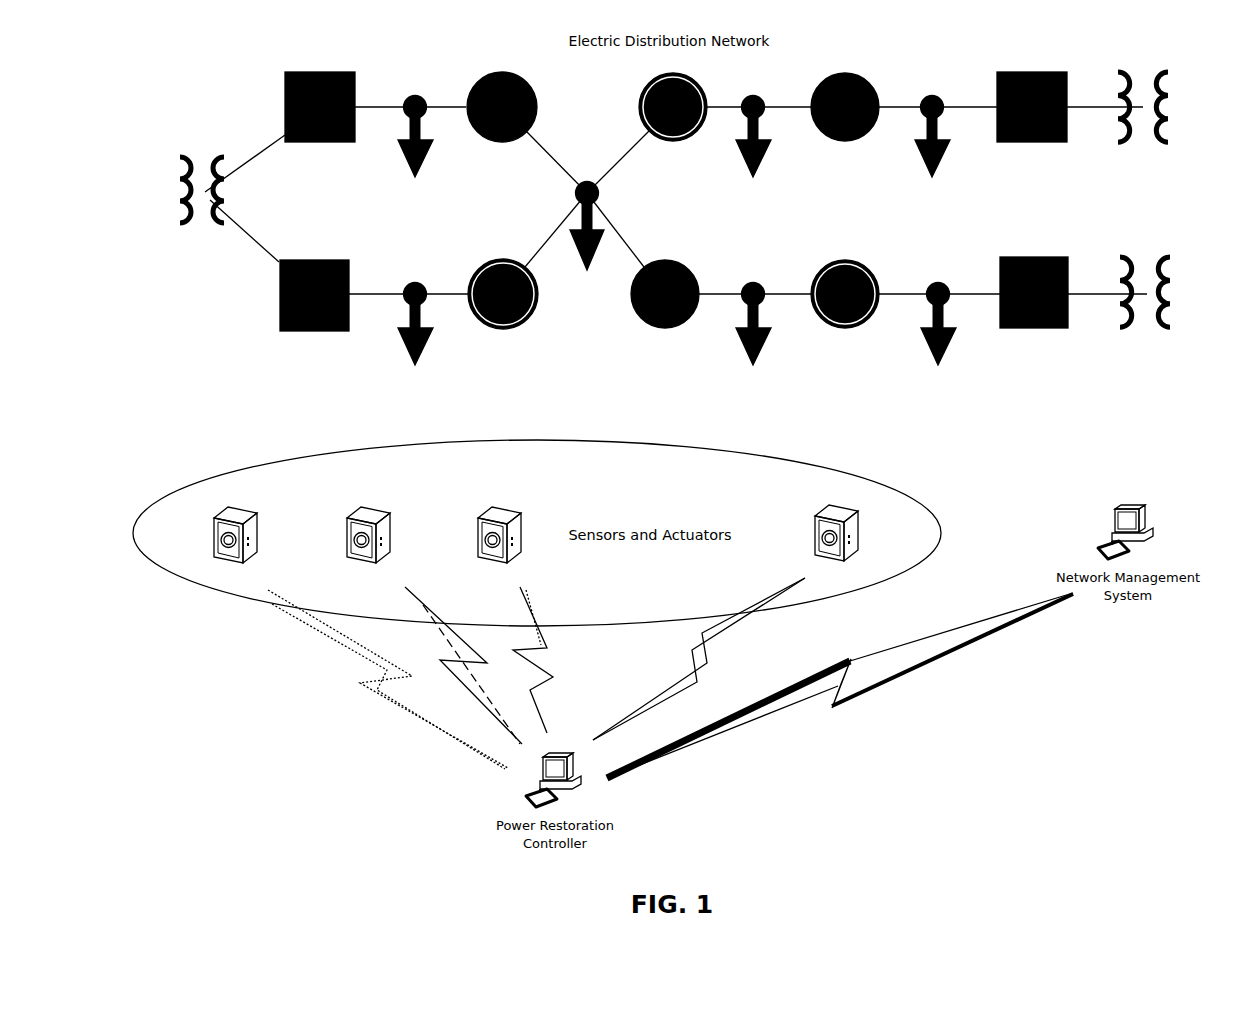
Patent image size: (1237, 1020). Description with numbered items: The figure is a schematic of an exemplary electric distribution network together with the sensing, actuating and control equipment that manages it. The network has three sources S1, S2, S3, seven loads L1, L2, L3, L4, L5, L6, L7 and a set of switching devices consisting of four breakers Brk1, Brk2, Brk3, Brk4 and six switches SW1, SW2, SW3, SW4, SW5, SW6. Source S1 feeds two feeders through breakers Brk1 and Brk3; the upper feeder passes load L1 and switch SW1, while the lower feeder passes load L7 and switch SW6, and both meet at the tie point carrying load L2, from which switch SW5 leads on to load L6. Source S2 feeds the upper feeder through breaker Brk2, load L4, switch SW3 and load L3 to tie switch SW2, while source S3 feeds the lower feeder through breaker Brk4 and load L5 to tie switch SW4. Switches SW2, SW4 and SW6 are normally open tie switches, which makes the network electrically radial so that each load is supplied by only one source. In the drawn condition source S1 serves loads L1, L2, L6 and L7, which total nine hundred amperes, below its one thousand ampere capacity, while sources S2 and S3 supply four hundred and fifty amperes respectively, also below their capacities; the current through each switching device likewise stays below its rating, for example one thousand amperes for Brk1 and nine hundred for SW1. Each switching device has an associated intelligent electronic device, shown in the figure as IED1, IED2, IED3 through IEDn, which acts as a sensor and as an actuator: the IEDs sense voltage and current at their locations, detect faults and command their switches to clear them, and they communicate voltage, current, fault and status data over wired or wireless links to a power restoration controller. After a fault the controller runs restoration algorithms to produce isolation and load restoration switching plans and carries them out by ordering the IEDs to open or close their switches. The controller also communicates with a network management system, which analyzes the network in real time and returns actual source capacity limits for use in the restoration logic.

The circuit breaker Brk1 is at (320, 128).
The circuit breaker Brk2 is at (1032, 128).
The circuit breaker Brk3 is at (314, 316).
The circuit breaker Brk4 is at (1034, 315).
The switch SW1 is at (502, 128).
The normally open tie switch SW2 is at (673, 129).
The switch SW3 is at (845, 129).
The normally open tie switch SW4 is at (845, 316).
The switch SW5 is at (665, 316).
The normally open tie switch SW6 is at (503, 316).
The load L1 is at (413, 165).
The load L2 is at (584, 253).
The load L3 is at (751, 165).
The load L4 is at (930, 165).
The load L5 is at (936, 352).
The load L6 is at (750, 352).
The load L7 is at (413, 352).
The source S1 is at (196, 213).
The source S2 is at (1140, 130).
The source S3 is at (1142, 315).
The intelligent electronic device IED1 is at (361, 638).
The intelligent electronic device IED2 is at (434, 625).
The intelligent electronic device IED3 is at (515, 620).
The intelligent electronic device IEDn is at (725, 622).